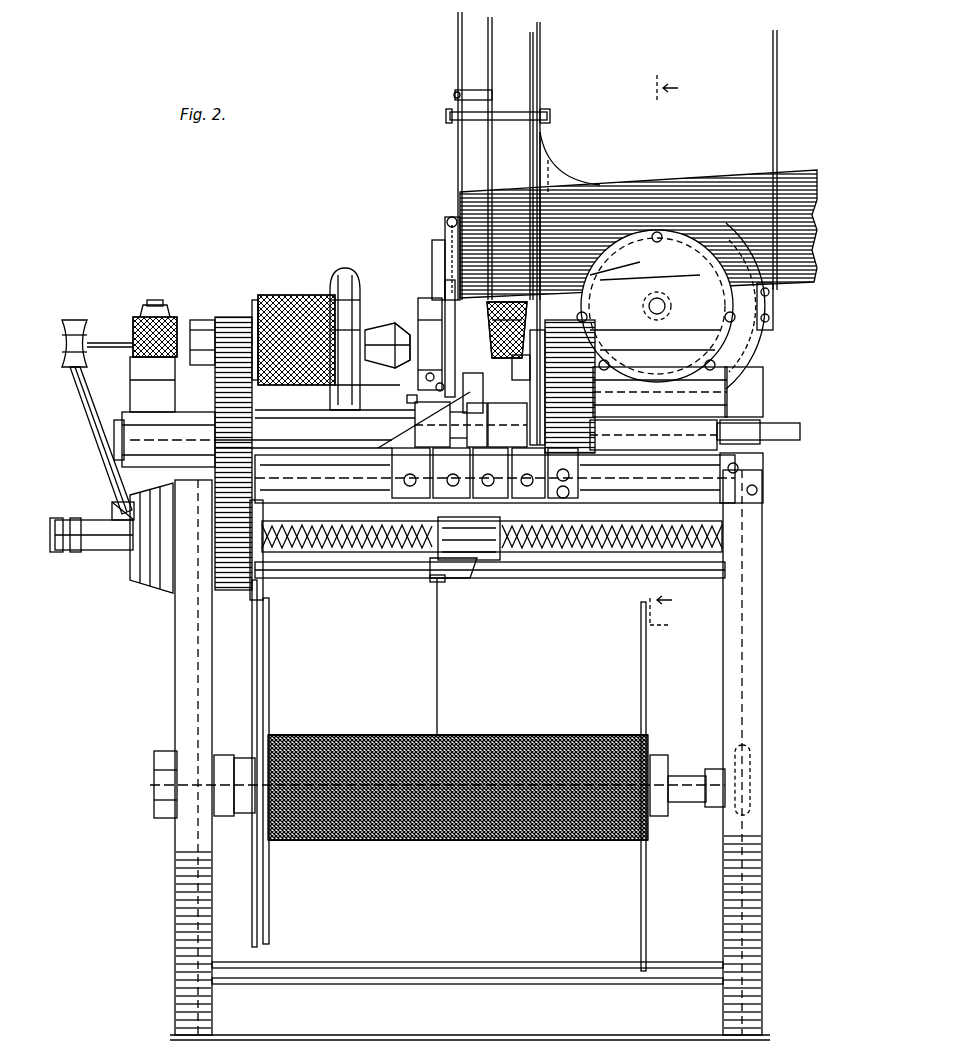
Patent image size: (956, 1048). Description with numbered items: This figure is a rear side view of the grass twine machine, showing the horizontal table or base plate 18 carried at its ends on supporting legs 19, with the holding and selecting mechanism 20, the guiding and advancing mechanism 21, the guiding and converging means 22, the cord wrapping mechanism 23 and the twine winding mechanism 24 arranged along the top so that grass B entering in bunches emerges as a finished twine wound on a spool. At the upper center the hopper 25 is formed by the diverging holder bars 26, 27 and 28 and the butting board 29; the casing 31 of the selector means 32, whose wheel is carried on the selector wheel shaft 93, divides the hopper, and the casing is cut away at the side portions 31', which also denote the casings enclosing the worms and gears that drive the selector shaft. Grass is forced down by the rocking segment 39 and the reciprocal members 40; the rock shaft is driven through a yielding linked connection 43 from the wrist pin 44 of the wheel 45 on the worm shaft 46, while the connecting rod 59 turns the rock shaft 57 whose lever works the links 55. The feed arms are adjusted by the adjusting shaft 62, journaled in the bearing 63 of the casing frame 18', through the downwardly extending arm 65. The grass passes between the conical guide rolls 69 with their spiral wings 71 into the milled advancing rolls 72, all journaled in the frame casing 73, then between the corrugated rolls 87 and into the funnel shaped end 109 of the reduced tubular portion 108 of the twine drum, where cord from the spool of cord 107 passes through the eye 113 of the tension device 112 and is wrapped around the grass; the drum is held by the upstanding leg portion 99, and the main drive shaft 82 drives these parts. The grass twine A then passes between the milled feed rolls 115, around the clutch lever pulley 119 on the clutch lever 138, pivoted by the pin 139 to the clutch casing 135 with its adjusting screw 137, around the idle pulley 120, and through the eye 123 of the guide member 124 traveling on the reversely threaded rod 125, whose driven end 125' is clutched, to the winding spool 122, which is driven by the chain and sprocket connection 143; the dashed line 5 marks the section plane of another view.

The supporting legs 19 is at (190, 668).
The table or base plate 18 is at (495, 485).
The casing frame 18' is at (375, 272).
The reversely threaded rod 125 is at (490, 540).
The driven end of threaded shaft 125' is at (284, 555).
The twine guide member 124 is at (490, 562).
The eye 123 is at (436, 582).
The twine winding mechanism 24 is at (270, 676).
The chain and sprocket wheel connection 143 is at (253, 650).
The winding spool 122 is at (642, 684).
The butting or end board 29 is at (458, 62).
The holder bar 26 is at (492, 65).
The holder bars 27 is at (541, 40).
The hopper 25 is at (486, 89).
The holding and selecting mechanism 20 is at (550, 150).
The rocking segment 39 is at (509, 173).
The holder bar 28 is at (773, 88).
The section line 5 is at (664, 351).
The grass B is at (726, 178).
The adjusting shaft 62 is at (446, 230).
The bearing 63 is at (452, 216).
The links 55 is at (434, 262).
The downwardly extending arm 65 is at (444, 290).
The selector means 32 is at (732, 341).
The reciprocal members 40 is at (658, 276).
The selector wheel shaft 93 is at (672, 307).
The casing 31 is at (637, 162).
The cut away portions / casings 31' is at (675, 385).
The guiding and advancing mechanism 21 is at (590, 318).
The main drive shaft 82 is at (786, 441).
The frame casing 73 is at (520, 496).
The yielding linked connection 43 is at (430, 344).
The reduced tubular portion 108 is at (382, 330).
The conical entrance or funnel shaped end 109 is at (395, 345).
The peripheral eye 113 is at (345, 266).
The cord wrapping mechanism 23 is at (332, 268).
The guiding and converging means 22 is at (417, 300).
The spool of cord 107 is at (276, 296).
The upstanding leg portion 99 is at (205, 318).
The twine tension device 112 is at (322, 406).
The milled feed rolls 115 is at (133, 328).
The idle pulley 120 is at (153, 304).
The clutch lever pulley 119 is at (74, 318).
The grass twine A is at (110, 362).
The clutch lever 138 is at (98, 458).
The pin 139 is at (112, 508).
The adjusting bolt or screw 137 is at (58, 552).
The clutch casing 135 is at (128, 556).
The conical guide rolls 69 is at (502, 328).
The spirally trending flanges or wings 71 is at (488, 320).
The milled advancing rolls 72 is at (512, 368).
The worm shaft 46 is at (482, 374).
The corrugated rolls 87 is at (426, 377).
The wrist pin 44 is at (436, 388).
The rock shaft 57 is at (407, 400).
The connecting rod 59 is at (471, 424).
The wheel 45 is at (412, 424).